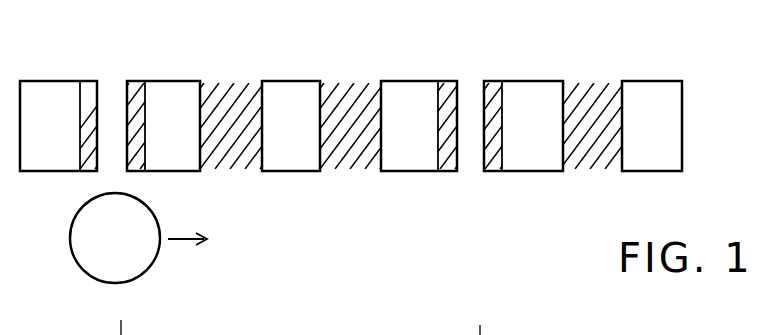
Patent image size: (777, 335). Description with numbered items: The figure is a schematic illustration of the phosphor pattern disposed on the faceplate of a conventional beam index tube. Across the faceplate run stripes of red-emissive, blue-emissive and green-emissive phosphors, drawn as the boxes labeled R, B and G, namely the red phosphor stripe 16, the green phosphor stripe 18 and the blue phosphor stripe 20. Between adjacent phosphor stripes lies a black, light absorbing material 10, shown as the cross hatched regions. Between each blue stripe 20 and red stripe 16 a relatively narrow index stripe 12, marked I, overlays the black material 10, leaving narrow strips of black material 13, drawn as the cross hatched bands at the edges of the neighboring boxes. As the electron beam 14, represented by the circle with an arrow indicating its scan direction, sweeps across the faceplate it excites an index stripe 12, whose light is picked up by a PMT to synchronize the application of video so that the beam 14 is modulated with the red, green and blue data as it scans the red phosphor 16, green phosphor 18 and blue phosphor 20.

The black, light absorbing material 10 is at (232, 170).
The index stripe 12 is at (115, 75).
The narrow strips of black material 13 is at (497, 92).
The electron beam 14 is at (158, 250).
The red phosphor stripe 16 is at (197, 81).
The green phosphor stripe 18 is at (305, 81).
The blue phosphor stripe 20 is at (408, 81).